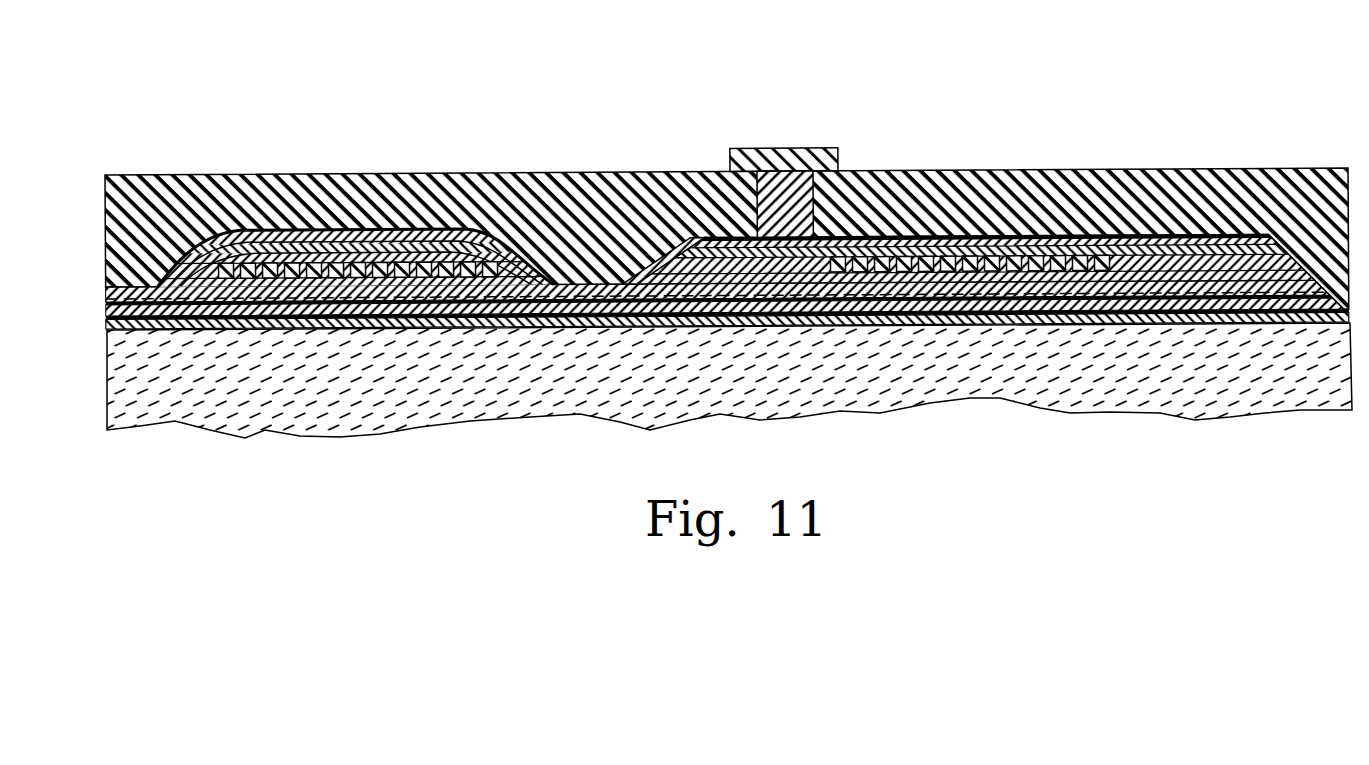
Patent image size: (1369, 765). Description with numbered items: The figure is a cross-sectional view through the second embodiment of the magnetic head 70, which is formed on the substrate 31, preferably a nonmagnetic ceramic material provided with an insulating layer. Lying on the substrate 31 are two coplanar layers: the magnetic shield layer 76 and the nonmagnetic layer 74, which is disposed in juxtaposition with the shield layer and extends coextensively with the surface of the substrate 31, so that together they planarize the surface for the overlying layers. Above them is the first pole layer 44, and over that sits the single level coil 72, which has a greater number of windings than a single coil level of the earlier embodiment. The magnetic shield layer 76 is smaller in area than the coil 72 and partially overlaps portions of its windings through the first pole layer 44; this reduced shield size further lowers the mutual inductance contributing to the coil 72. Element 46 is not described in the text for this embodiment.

The magnetic head 70 is at (1235, 127).
The piezoelectric transducer element 46 is at (372, 230).
The single level coil 72 is at (516, 254).
The first pole layer 44 is at (105, 308).
The magnetic shield layer 76 is at (103, 322).
The nonmagnetic layer 74 is at (1262, 317).
The substrate 31 is at (421, 414).